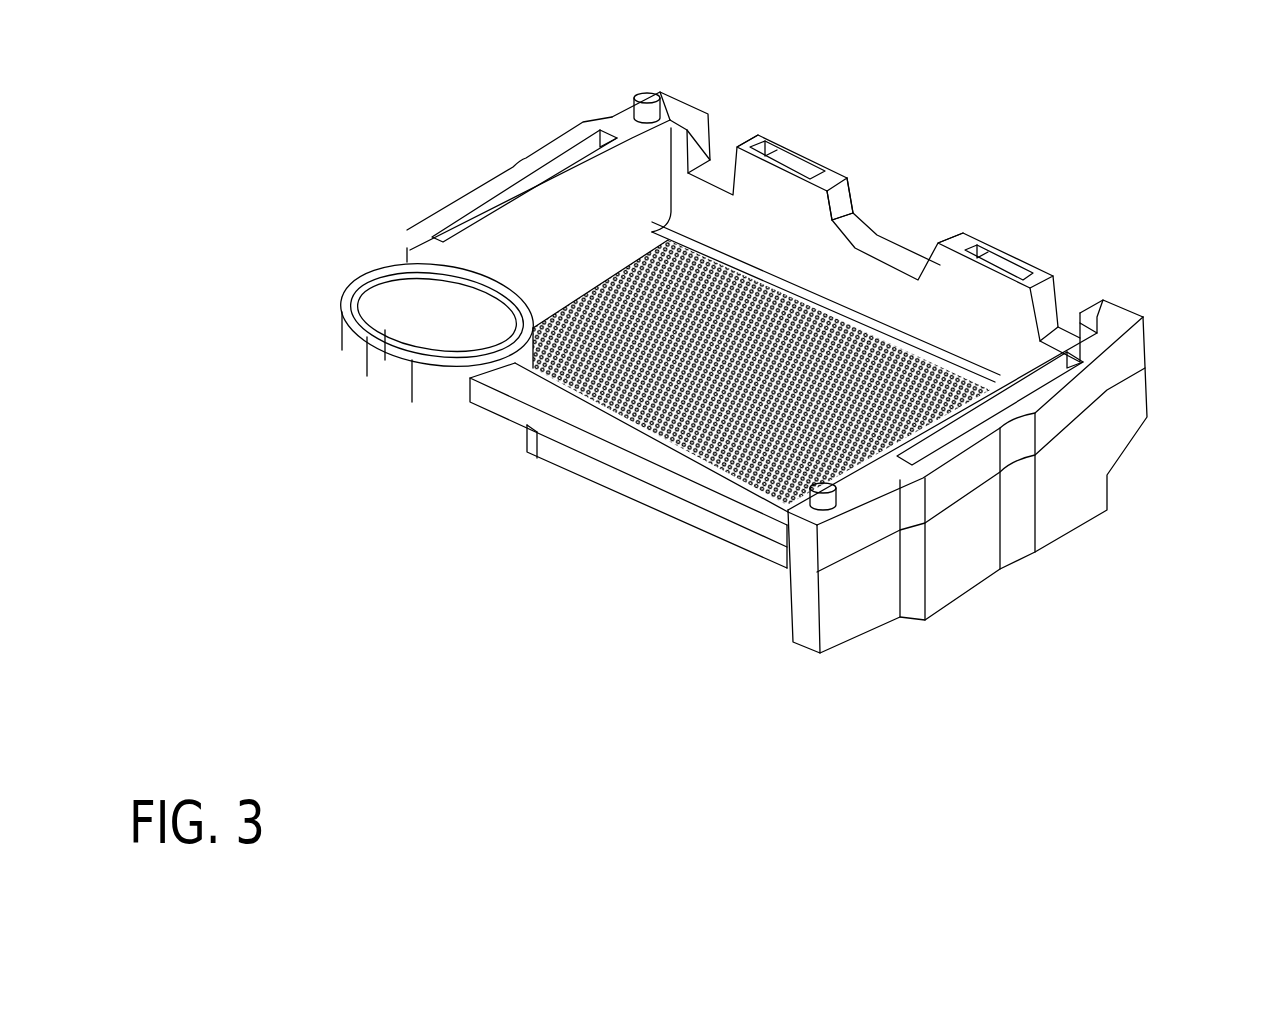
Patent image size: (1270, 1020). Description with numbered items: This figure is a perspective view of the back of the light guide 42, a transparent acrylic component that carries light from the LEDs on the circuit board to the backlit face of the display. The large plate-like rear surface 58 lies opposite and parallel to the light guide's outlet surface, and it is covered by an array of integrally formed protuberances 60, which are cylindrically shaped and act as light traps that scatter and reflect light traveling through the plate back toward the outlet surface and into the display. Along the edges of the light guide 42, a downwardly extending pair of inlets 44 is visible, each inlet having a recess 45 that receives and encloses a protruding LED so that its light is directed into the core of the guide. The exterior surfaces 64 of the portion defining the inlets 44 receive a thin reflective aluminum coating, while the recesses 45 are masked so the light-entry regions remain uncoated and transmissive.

The light guide 42 is at (1158, 389).
The inlets 44 is at (755, 133).
The recess 45 is at (780, 157).
The rear surface 58 is at (750, 370).
The protuberances 60 is at (642, 262).
The exterior surfaces 64 is at (848, 193).